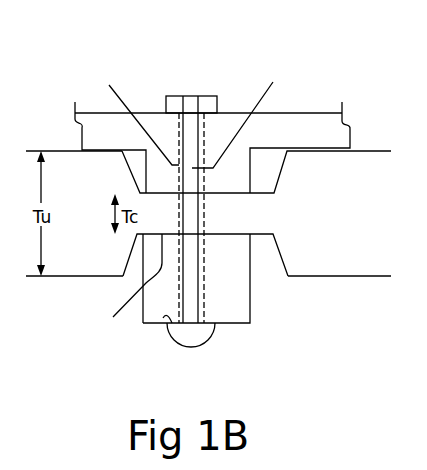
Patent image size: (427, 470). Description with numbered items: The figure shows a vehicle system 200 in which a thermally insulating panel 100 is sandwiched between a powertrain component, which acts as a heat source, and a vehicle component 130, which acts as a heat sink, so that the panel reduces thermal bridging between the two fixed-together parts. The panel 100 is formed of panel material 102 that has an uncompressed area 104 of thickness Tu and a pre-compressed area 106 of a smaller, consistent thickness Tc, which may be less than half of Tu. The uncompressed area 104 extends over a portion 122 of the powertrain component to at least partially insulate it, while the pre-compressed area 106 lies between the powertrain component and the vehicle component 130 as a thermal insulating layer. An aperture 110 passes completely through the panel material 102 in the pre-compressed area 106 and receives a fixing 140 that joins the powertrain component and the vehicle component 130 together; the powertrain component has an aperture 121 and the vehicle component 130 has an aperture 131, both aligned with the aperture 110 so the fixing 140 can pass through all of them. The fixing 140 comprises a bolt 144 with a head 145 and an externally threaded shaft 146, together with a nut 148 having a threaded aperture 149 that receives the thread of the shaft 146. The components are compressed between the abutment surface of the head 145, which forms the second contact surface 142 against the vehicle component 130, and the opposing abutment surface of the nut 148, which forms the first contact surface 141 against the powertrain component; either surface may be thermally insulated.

The thermally insulating panel 100 is at (56, 150).
The panel material 102 is at (66, 226).
The uncompressed area 104 is at (60, 278).
The pre-compressed area 106 is at (123, 286).
The aperture 110 is at (199, 255).
The aperture 121 is at (133, 115).
The portion 122 is at (99, 141).
The vehicle component 130 is at (251, 324).
The aperture 131 is at (204, 297).
The fixing 140 is at (166, 370).
The first contact surface 141 is at (170, 113).
The second contact surface 142 is at (163, 318).
The bolt 144 is at (197, 347).
The head 145 is at (212, 338).
The shaft 146 is at (187, 217).
The nut 148 is at (170, 95).
The threaded aperture 149 is at (180, 96).
The vehicle system 200 is at (343, 91).